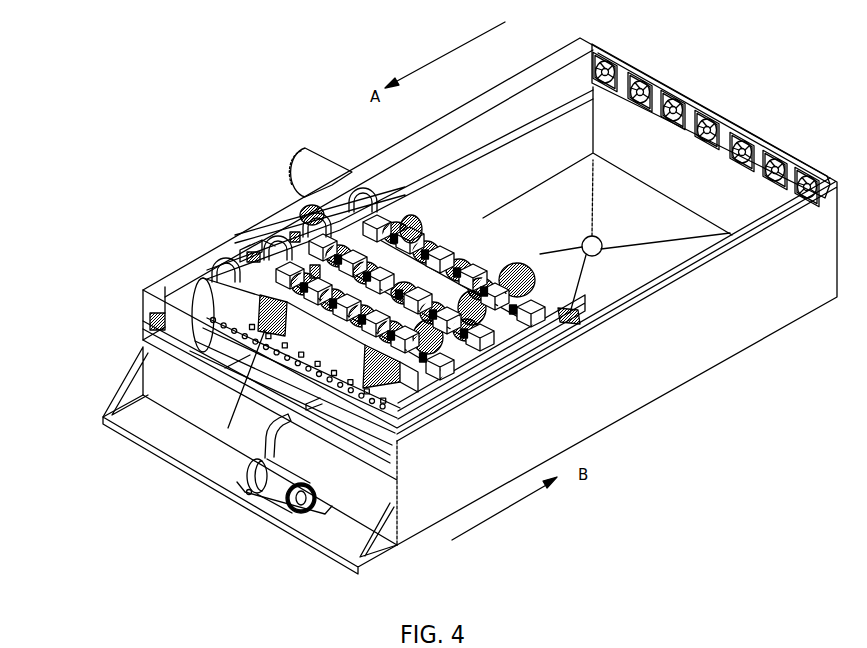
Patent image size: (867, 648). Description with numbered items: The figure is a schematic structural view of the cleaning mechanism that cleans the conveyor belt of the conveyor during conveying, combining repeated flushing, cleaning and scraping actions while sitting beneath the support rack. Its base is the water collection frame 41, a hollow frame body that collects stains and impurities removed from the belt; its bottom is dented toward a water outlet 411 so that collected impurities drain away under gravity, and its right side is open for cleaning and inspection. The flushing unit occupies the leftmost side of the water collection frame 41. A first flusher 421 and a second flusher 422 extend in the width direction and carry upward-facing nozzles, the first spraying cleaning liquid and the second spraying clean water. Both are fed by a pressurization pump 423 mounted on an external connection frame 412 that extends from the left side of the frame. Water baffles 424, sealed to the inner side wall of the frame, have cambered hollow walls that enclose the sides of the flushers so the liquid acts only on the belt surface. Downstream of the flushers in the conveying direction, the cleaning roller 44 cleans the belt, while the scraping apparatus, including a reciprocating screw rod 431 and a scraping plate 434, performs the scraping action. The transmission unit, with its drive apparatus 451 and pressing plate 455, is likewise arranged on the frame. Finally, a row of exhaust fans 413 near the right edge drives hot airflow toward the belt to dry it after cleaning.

The water collection frame 41 is at (605, 385).
The water outlet 411 is at (592, 245).
The external connection frame 412 is at (175, 443).
The exhaust fan 413 is at (767, 141).
The first flusher 421 is at (290, 400).
The second flusher 422 is at (305, 500).
The pressurization pump 423 is at (277, 487).
The water baffle 424 is at (190, 316).
The reciprocating screw rod 431 is at (292, 233).
The scraping plate 434 is at (382, 233).
The cleaning roller 44 is at (255, 242).
The drive apparatus 451 is at (312, 168).
The pressing plate 455 is at (247, 258).